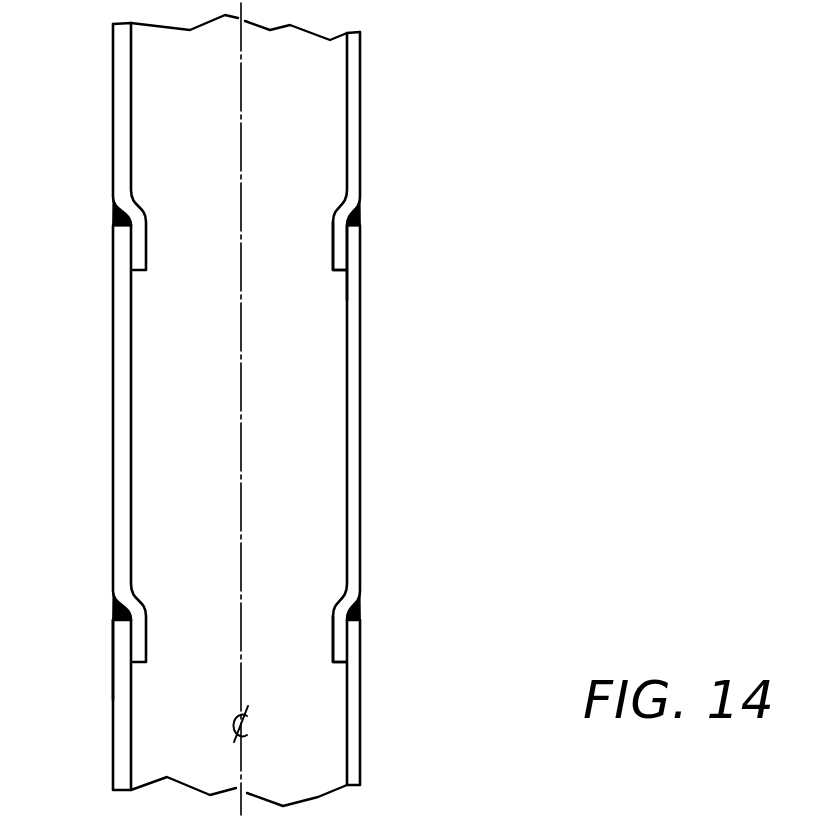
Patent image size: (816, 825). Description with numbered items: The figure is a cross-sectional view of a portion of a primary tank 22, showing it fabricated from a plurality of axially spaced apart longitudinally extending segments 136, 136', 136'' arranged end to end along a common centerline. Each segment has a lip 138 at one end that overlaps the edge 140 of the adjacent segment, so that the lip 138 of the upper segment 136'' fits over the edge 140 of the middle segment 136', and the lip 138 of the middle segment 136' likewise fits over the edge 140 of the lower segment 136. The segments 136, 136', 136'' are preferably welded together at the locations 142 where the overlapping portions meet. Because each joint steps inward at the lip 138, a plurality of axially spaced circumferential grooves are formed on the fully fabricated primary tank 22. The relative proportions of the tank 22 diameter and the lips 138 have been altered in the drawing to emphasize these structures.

The primary tank 22 is at (390, 431).
The longitudinally extending segment 136 is at (289, 713).
The longitudinally extending segment 136' is at (292, 443).
The longitudinally extending segment 136'' is at (313, 142).
The lip 138 is at (333, 248).
The edge 140 is at (357, 243).
The weld location 142 is at (356, 215).